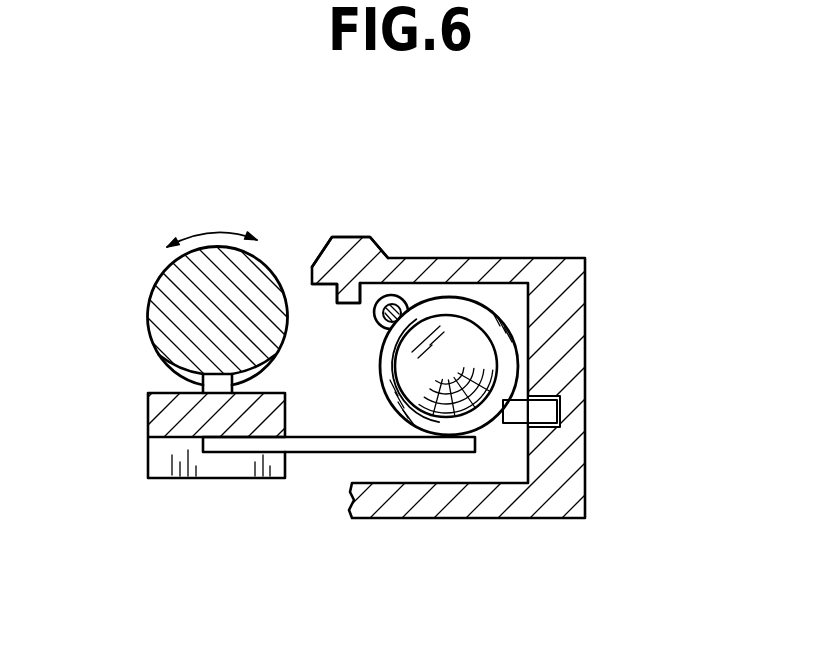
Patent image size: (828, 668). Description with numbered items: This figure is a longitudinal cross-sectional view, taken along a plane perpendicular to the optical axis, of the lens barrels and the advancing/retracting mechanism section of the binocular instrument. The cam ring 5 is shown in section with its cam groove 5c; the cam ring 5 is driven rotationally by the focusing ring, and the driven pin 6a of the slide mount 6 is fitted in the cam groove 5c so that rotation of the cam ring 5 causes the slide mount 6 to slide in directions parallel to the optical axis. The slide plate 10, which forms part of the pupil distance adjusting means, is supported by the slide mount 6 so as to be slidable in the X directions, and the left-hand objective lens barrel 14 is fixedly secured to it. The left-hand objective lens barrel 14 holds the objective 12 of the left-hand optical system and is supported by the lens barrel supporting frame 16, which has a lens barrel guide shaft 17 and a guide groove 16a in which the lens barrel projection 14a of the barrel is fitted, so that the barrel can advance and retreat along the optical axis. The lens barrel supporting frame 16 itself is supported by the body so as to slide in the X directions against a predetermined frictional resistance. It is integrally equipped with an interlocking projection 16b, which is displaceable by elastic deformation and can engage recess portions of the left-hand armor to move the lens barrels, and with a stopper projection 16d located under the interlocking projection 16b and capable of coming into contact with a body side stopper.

The cam ring 5 is at (167, 293).
The cam groove 5c is at (171, 362).
The slide mount 6 is at (173, 413).
The driven pin 6a is at (215, 376).
The slide plate 10 is at (324, 456).
The objective 12 is at (437, 383).
The left-hand objective lens barrel 14 is at (506, 322).
The lens barrel projection 14a is at (541, 412).
The lens barrel supporting frame 16 is at (587, 323).
The guide groove 16a is at (562, 385).
The interlocking projection 16b is at (355, 238).
The stopper projection 16d is at (316, 299).
The lens barrel guide shaft 17 is at (413, 302).